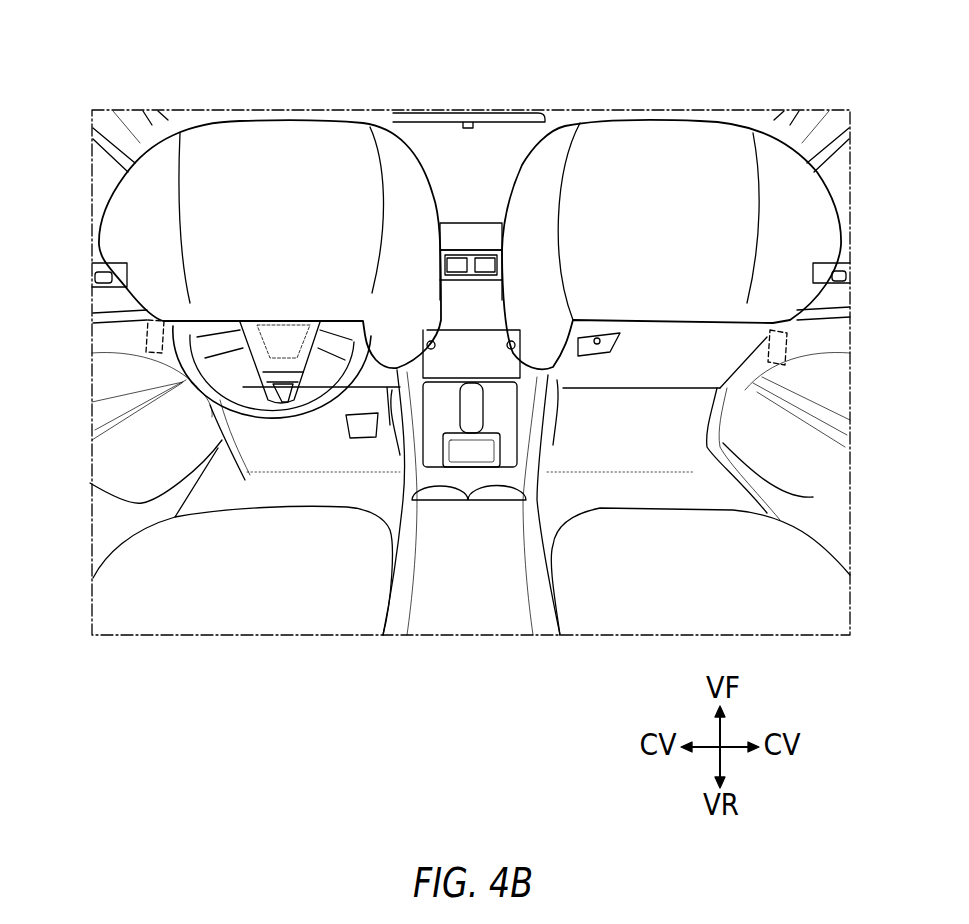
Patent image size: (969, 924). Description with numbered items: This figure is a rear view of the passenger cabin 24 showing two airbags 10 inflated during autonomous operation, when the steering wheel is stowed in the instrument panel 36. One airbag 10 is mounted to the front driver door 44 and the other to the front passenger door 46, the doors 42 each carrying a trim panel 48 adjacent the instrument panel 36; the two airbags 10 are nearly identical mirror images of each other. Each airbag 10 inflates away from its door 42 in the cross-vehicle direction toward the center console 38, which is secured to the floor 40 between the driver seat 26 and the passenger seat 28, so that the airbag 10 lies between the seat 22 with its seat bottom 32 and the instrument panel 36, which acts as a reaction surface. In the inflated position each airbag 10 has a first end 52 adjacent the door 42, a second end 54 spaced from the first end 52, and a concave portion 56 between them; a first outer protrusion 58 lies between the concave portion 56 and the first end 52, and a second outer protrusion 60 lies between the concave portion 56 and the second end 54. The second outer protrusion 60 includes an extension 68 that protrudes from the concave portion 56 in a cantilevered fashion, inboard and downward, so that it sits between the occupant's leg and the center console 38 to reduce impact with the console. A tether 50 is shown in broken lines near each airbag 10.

The airbag 10 is at (470, 190).
The seat 22 is at (475, 594).
The passenger cabin 24 is at (478, 150).
The driver seat 26 is at (100, 550).
The passenger seat 28 is at (847, 560).
The seat bottom 32 is at (237, 593).
The instrument panel 36 is at (470, 223).
The center console 38 is at (530, 575).
The floor 40 is at (250, 503).
The door 42 is at (100, 258).
The front driver door 44 is at (92, 274).
The front passenger door 46 is at (846, 274).
The trim panel 48 is at (140, 428).
The tether 50 is at (777, 352).
The first end 52 is at (140, 207).
The second end 54 is at (424, 190).
The concave portion 56 is at (277, 145).
The first outer protrusion 58 is at (150, 115).
The second outer protrusion 60 is at (407, 178).
The extension 68 is at (392, 390).